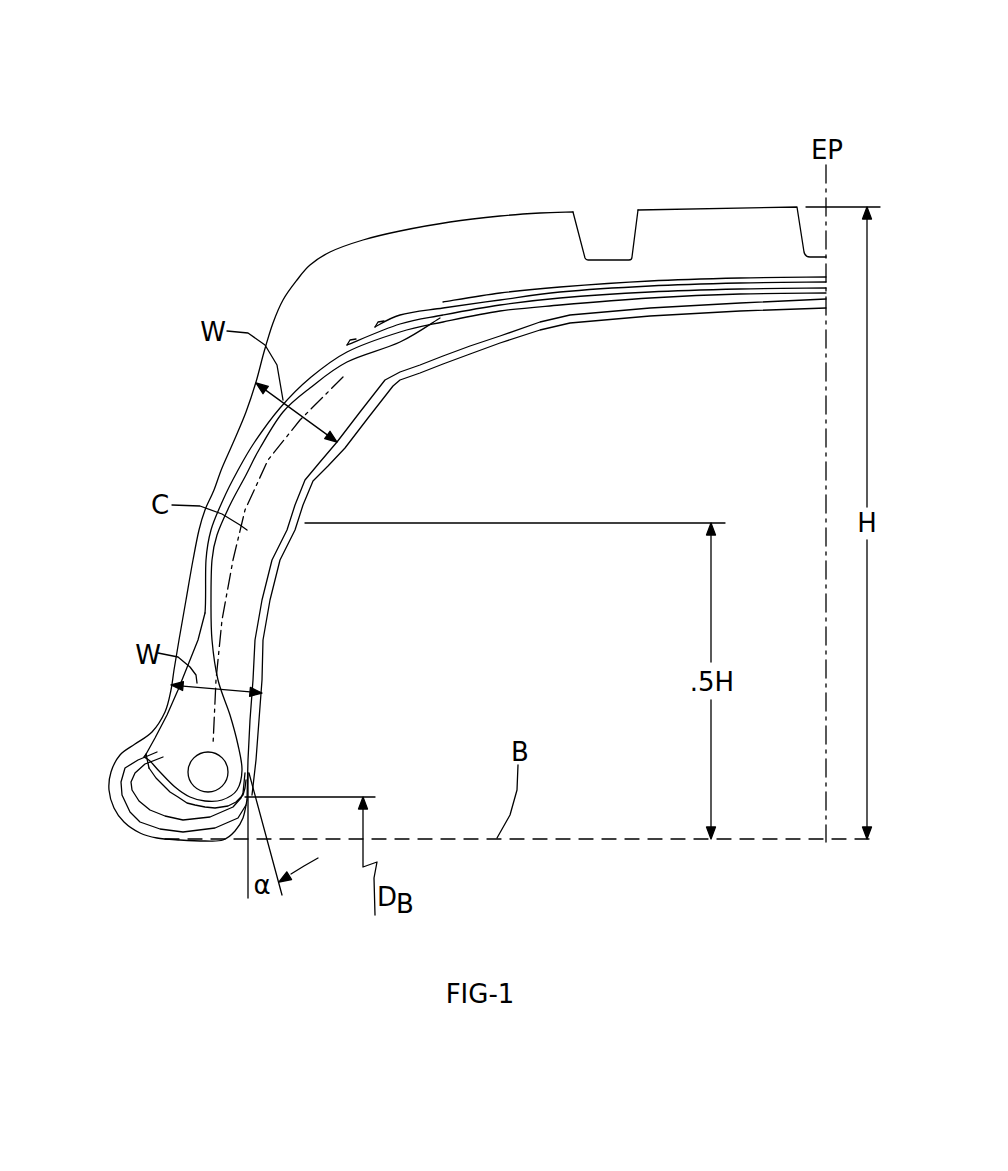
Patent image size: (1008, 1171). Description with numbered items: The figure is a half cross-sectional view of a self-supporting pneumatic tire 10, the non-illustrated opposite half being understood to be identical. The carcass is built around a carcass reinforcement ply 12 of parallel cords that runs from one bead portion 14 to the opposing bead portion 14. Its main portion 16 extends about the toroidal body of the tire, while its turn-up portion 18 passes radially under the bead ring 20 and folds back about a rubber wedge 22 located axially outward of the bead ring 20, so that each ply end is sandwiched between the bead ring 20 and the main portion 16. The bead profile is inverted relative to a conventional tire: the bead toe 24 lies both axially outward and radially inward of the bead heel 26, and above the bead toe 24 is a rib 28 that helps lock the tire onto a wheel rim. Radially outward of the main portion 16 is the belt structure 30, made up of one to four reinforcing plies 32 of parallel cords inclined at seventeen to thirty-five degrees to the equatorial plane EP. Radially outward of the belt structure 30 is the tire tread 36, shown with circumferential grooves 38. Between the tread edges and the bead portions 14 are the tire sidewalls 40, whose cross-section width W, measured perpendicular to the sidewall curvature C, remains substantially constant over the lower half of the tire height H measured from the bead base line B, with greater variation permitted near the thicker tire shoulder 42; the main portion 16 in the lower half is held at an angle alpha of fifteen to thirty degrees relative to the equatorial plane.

The pneumatic tire 10 is at (341, 457).
The carcass reinforcement ply 12 is at (485, 550).
The bead portion 14 is at (104, 644).
The main portion 16 is at (161, 661).
The turn-up portion 18 is at (131, 726).
The bead ring 20 is at (253, 747).
The rubber wedge 22 is at (160, 802).
The bead toe 24 is at (183, 830).
The bead heel 26 is at (215, 835).
The rib 28 is at (92, 743).
The belt structure 30 is at (586, 266).
The reinforcing ply 32 is at (580, 301).
The tire tread 36 is at (732, 188).
The circumferential groove 38 is at (605, 203).
The tire sidewall 40 is at (473, 549).
The tire shoulder 42 is at (250, 279).